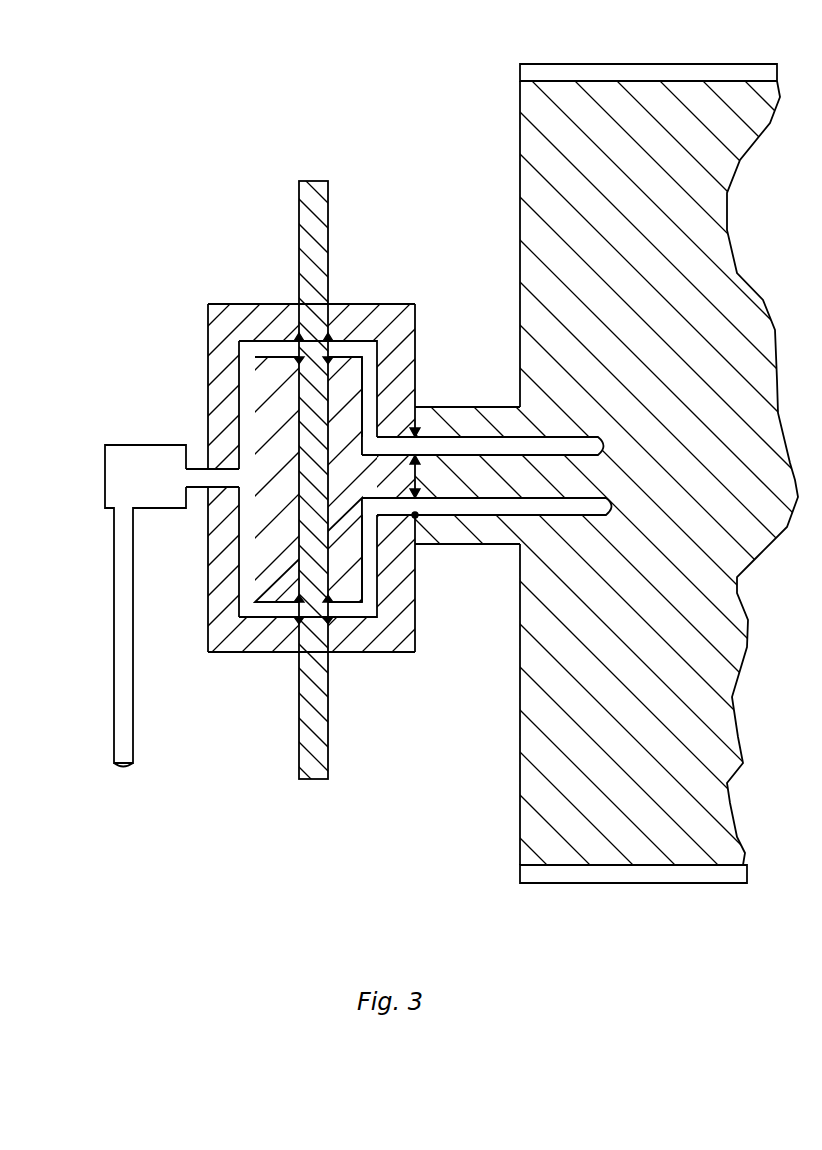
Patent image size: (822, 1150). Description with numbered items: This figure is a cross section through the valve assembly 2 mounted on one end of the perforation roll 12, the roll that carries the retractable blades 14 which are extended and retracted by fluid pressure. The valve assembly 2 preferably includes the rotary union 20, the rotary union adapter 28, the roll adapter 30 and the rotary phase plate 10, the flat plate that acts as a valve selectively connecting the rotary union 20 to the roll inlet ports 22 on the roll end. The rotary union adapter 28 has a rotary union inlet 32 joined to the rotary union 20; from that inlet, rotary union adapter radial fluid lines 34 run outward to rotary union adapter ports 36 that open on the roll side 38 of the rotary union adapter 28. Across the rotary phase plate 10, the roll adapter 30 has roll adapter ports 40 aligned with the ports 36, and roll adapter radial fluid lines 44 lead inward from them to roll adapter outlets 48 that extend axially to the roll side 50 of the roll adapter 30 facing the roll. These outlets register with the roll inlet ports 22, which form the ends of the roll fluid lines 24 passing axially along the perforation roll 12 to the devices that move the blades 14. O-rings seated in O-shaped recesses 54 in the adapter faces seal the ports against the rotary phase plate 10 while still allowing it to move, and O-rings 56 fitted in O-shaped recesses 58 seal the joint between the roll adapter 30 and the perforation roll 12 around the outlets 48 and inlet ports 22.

The valve assembly 2 is at (213, 735).
The rotary phase plate 10 is at (318, 779).
The perforation roll 12 is at (600, 96).
The retractable blades 14 is at (645, 72).
The rotary union 20 is at (105, 480).
The roll inlet ports 22 is at (415, 505).
The roll fluid lines 24 is at (600, 540).
The rotary union adapter 28 is at (228, 302).
The roll adapter 30 is at (398, 303).
The rotary union inlet 32 is at (238, 479).
The rotary union adapter radial fluid lines 34 is at (248, 375).
The rotary union adapter ports 36 is at (270, 350).
The roll side of the rotary union adapter 38 is at (295, 618).
The roll adapter ports 40 is at (348, 347).
The roll adapter radial fluid lines 44 is at (372, 363).
The roll adapter outlets 48 is at (415, 430).
The roll side of the roll adapter 50 is at (418, 605).
The O-shaped recesses 54 is at (298, 620).
The O-rings 56 is at (415, 517).
The O-shaped recesses 58 is at (420, 525).